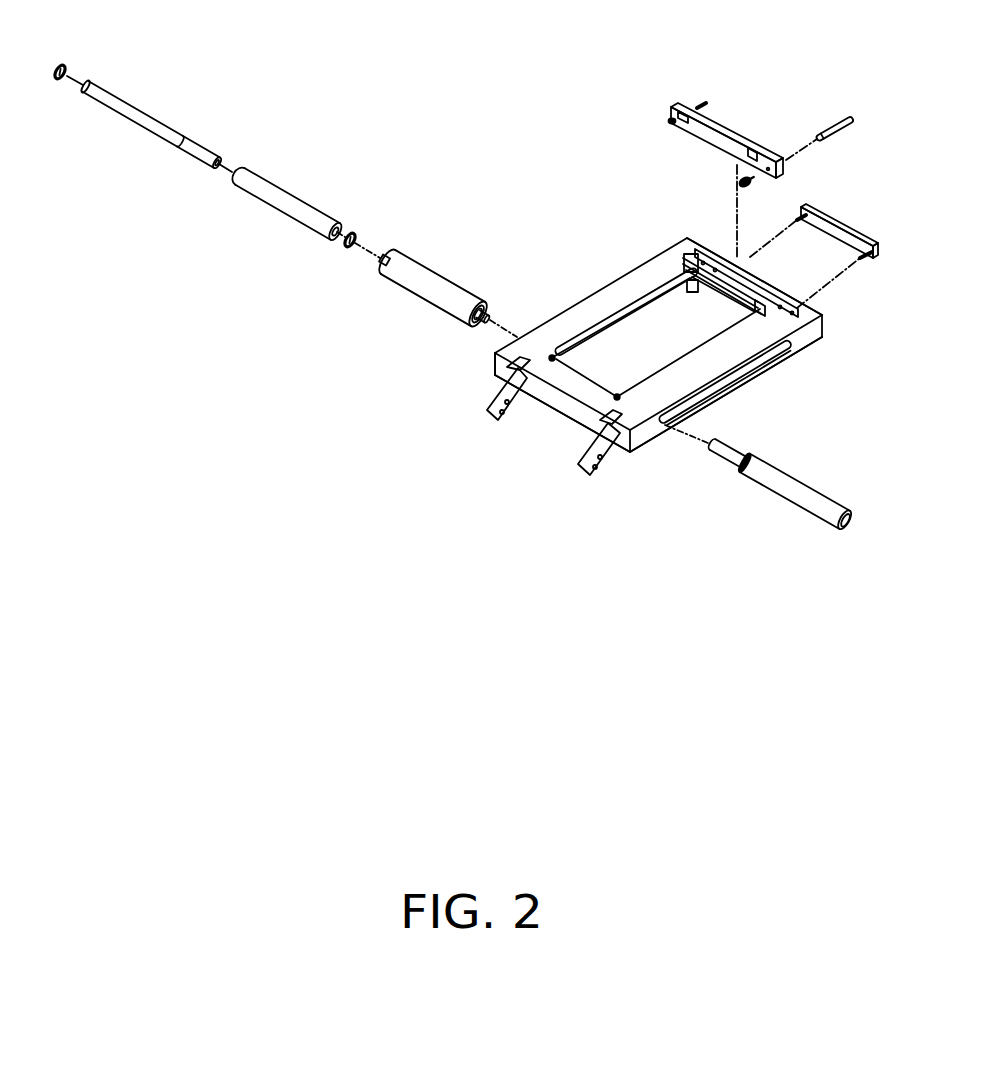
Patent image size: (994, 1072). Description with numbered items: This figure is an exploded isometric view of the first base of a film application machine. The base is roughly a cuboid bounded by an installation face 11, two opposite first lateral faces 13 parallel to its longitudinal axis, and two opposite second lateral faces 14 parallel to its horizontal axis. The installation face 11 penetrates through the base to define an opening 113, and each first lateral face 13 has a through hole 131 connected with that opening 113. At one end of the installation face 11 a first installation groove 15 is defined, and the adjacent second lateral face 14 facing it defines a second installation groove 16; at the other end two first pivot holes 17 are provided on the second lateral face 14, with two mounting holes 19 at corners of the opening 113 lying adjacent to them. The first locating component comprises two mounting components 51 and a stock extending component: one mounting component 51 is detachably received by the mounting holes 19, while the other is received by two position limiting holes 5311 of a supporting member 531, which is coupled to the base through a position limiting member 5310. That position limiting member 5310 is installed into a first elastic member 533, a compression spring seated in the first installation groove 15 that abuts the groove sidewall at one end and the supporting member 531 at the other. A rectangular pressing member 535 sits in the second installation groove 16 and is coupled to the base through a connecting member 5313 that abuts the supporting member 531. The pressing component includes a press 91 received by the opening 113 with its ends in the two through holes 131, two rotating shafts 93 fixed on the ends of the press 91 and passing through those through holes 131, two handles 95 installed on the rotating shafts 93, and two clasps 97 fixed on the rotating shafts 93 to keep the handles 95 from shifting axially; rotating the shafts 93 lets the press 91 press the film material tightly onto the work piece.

The installation face 11 is at (553, 324).
The first lateral face 13 is at (797, 342).
The second lateral face 14 is at (573, 418).
The first installation groove 15 is at (798, 342).
The second installation groove 16 is at (745, 271).
The first pivot hole 17 is at (493, 358).
The mounting hole 19 is at (618, 398).
The mounting component 51 is at (552, 362).
The press 91 is at (422, 283).
The rotating shaft 93 is at (127, 105).
The handle 95 is at (273, 198).
The clasp 97 is at (66, 57).
The opening 113 is at (653, 338).
The through hole 131 is at (607, 328).
The supporting member 531 is at (717, 118).
The first elastic member 533 is at (751, 183).
The pressing member 535 is at (850, 224).
The position limiting member 5310 is at (853, 126).
The position limiting hole 5311 is at (753, 153).
The connecting member 5313 is at (861, 262).